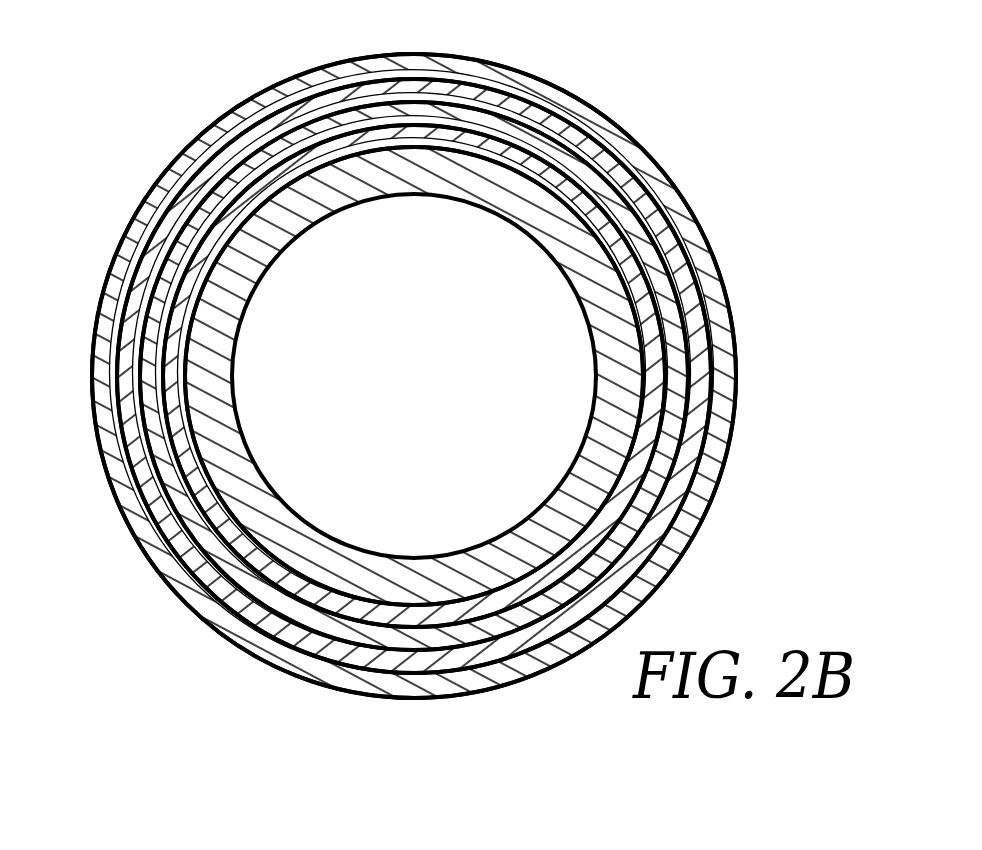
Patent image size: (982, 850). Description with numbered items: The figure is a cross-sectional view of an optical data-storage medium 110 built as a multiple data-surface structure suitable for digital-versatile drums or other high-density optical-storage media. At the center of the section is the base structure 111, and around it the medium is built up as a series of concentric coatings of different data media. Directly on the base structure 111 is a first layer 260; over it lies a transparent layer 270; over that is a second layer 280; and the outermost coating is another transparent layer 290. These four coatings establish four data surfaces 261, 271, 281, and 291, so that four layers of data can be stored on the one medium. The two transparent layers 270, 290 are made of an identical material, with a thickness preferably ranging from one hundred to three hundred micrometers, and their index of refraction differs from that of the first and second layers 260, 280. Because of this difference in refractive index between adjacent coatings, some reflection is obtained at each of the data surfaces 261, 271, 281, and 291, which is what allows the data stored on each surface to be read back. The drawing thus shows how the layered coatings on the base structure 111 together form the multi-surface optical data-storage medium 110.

The optical data-storage medium 110 is at (736, 559).
The base structure 111 is at (559, 240).
The first layer 260 is at (626, 250).
The data surface 261 is at (217, 250).
The transparent layer 270 is at (605, 190).
The data surface 271 is at (243, 187).
The second layer 280 is at (580, 140).
The data surface 281 is at (270, 137).
The transparent layer 290 is at (532, 84).
The data surface 291 is at (314, 94).